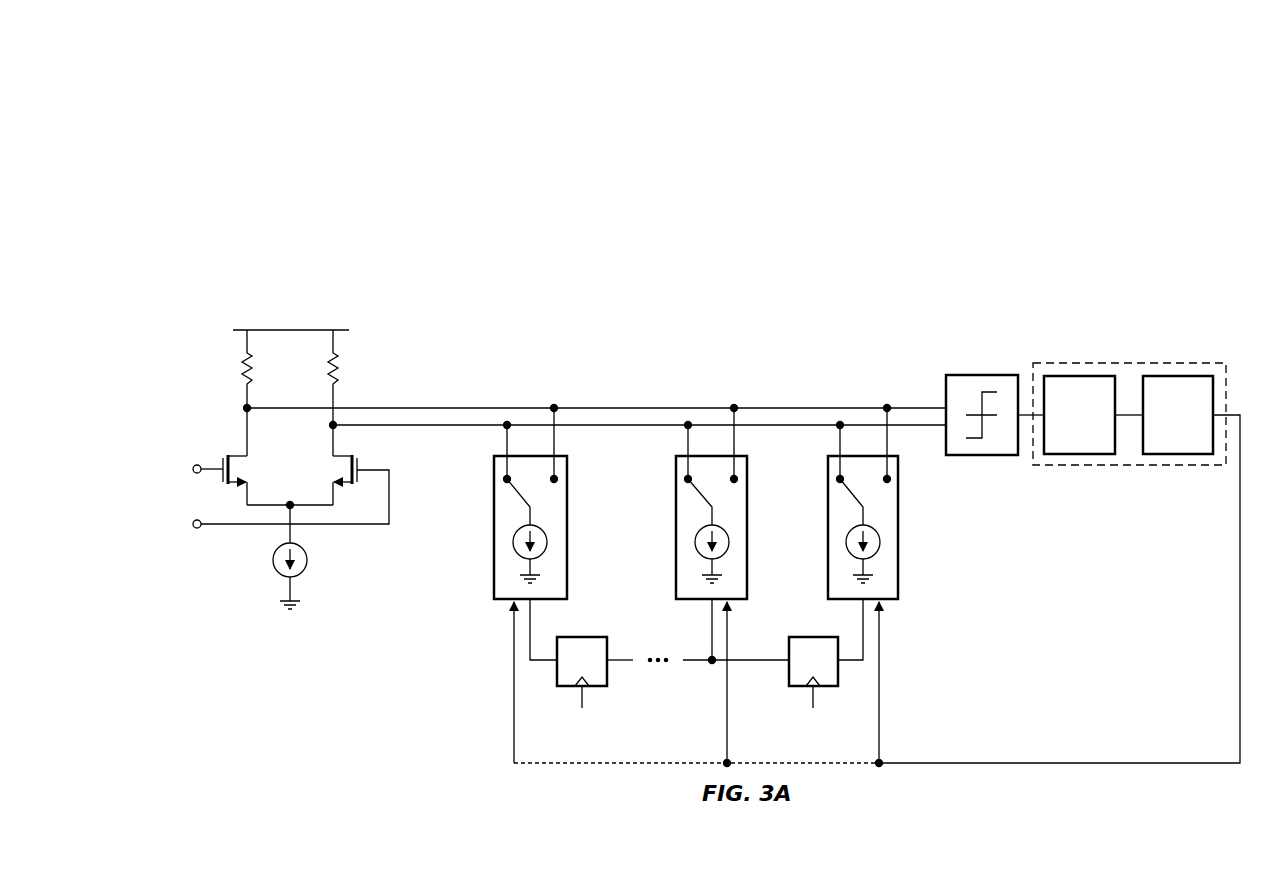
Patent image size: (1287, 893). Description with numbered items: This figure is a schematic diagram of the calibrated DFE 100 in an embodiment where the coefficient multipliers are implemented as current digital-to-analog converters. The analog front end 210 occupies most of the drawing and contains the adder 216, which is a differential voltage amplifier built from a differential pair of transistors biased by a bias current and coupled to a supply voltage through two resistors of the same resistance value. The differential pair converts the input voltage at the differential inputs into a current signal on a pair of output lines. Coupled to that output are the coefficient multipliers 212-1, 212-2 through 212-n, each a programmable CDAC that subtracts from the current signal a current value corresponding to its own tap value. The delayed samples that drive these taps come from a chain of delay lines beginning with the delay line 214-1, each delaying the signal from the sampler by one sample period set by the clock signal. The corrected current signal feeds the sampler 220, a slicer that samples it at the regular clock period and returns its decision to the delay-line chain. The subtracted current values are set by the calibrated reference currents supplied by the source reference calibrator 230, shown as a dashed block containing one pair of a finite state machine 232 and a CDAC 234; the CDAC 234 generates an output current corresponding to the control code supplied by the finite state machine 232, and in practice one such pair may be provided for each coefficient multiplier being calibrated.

The calibrated DFE 100 is at (1182, 167).
The analog front end 210 is at (200, 250).
The adder 216 is at (205, 293).
The coefficient multiplier 212-n is at (494, 532).
The coefficient multiplier 212-2 is at (676, 532).
The coefficient multiplier 212-1 is at (898, 530).
The delay line 214-1 is at (811, 637).
The sampler 220 is at (982, 375).
The source reference calibrator 230 is at (1128, 363).
The finite state machine 232 is at (1080, 455).
The CDAC 234 is at (1178, 455).